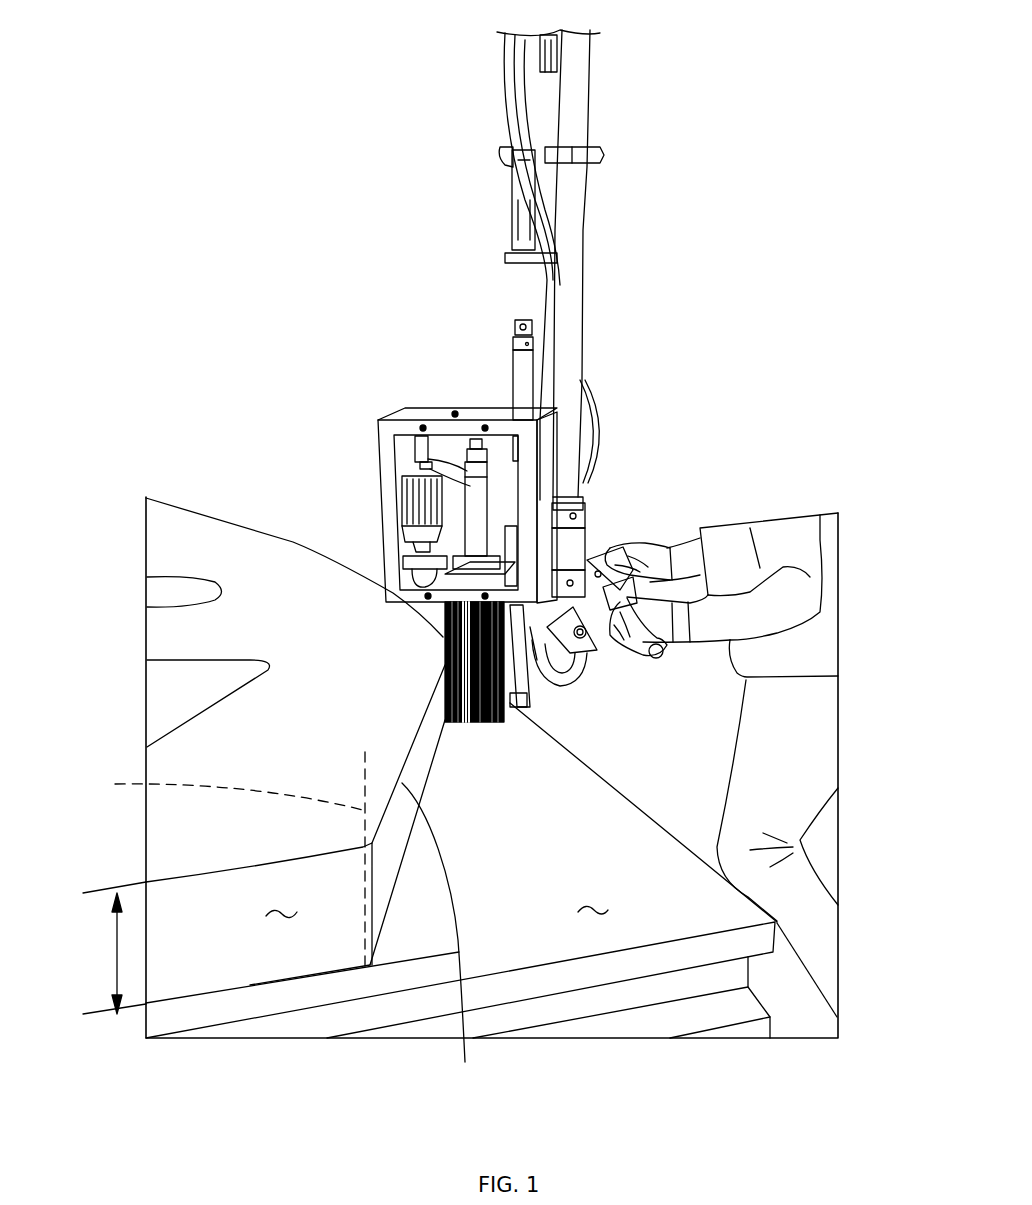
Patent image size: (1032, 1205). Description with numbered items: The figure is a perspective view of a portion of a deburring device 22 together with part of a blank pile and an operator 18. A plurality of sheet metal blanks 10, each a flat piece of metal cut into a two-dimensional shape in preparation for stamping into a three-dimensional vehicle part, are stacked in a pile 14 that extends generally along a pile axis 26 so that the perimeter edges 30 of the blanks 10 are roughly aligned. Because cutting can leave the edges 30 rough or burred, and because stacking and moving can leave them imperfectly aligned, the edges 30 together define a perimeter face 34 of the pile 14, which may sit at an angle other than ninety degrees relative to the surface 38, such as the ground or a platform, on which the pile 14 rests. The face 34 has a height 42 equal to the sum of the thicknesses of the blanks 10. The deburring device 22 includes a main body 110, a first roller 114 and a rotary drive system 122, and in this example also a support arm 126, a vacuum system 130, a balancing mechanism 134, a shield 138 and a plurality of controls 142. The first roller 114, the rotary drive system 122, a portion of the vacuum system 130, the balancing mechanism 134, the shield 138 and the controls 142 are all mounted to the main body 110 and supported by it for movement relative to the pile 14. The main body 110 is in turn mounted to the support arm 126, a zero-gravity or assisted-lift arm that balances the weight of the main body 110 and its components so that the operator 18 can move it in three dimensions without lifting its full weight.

The sheet metal blank 10 is at (233, 847).
The pile 14 is at (153, 637).
The operator 18 is at (838, 562).
The deburring device 22 is at (390, 298).
The pile axis 26 is at (225, 859).
The perimeter edge 30 is at (440, 941).
The perimeter face 34 is at (279, 917).
The surface 38 is at (590, 912).
The height 42 is at (117, 945).
The main body 110 is at (513, 560).
The first roller 114 is at (443, 627).
The rotary drive system 122 is at (470, 452).
The support arm 126 is at (593, 110).
The vacuum system 130 is at (570, 695).
The balancing mechanism 134 is at (512, 382).
The shield 138 is at (378, 452).
The controls 142 is at (597, 552).